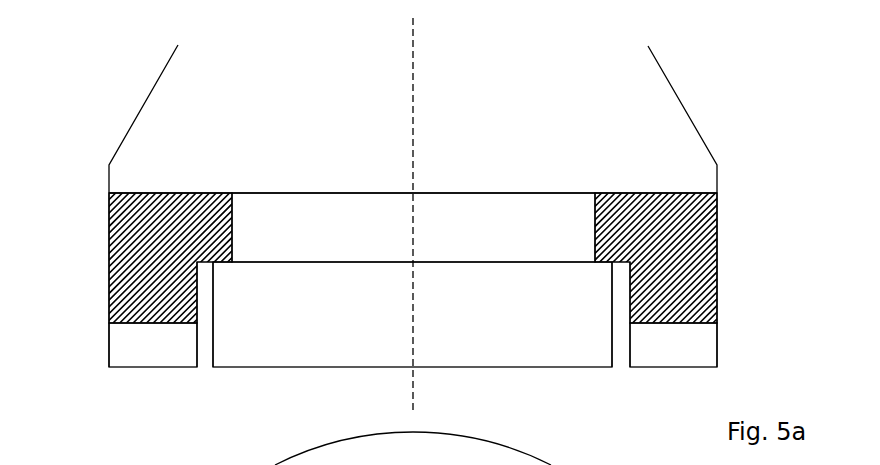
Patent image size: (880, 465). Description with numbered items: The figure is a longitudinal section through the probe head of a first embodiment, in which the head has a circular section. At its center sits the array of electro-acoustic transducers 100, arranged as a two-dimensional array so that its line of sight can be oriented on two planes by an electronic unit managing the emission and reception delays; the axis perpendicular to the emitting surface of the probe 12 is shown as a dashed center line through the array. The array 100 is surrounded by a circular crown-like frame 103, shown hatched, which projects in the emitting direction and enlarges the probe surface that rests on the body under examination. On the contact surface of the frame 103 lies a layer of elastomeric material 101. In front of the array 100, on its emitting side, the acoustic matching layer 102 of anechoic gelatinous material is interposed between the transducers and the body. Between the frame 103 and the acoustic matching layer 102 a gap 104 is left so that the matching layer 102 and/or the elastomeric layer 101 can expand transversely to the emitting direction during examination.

The axis perpendicular to the emitting surface of the probe 12 is at (413, 93).
The array of electro-acoustic transducers 100 is at (333, 193).
The layer of elastomeric material 101 is at (109, 360).
The acoustic matching layer 102 is at (272, 367).
The frame 103 is at (109, 313).
The gap 104 is at (205, 350).